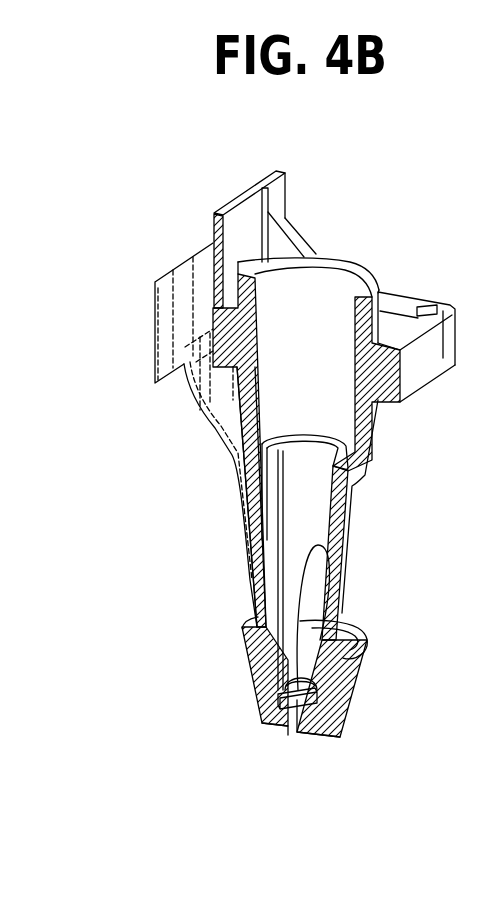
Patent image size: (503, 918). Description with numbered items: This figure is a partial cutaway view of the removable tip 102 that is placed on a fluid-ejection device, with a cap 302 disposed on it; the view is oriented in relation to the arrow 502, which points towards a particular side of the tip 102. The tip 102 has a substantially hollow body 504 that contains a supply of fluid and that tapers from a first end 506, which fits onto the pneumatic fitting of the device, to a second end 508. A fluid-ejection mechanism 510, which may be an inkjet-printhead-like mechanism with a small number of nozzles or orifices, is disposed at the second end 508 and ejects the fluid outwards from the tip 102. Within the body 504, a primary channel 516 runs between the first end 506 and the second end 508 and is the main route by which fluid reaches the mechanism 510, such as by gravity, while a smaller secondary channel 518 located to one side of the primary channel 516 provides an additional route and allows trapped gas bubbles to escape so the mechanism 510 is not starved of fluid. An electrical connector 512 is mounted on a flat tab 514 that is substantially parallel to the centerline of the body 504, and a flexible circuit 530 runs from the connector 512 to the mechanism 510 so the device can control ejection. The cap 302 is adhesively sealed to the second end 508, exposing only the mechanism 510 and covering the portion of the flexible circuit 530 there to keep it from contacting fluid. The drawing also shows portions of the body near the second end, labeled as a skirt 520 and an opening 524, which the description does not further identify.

The removable tip 102 is at (208, 620).
The cap 302 is at (328, 735).
The arrow 502 is at (160, 215).
The hollow body 504 is at (366, 420).
The first end 506 is at (368, 276).
The second end 508 is at (333, 653).
The fluid-ejection mechanism 510 is at (288, 728).
The electrical connector 512 is at (165, 352).
The flat tab 514 is at (250, 190).
The primary channel 516 is at (333, 543).
The secondary channel 518 is at (258, 568).
The skirt 520 is at (355, 488).
The opening 524 is at (313, 630).
The flexible circuit 530 is at (222, 415).